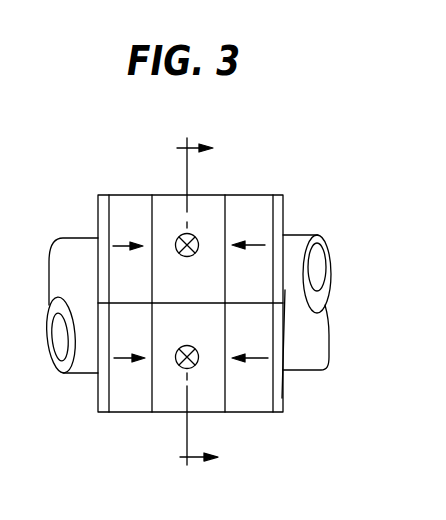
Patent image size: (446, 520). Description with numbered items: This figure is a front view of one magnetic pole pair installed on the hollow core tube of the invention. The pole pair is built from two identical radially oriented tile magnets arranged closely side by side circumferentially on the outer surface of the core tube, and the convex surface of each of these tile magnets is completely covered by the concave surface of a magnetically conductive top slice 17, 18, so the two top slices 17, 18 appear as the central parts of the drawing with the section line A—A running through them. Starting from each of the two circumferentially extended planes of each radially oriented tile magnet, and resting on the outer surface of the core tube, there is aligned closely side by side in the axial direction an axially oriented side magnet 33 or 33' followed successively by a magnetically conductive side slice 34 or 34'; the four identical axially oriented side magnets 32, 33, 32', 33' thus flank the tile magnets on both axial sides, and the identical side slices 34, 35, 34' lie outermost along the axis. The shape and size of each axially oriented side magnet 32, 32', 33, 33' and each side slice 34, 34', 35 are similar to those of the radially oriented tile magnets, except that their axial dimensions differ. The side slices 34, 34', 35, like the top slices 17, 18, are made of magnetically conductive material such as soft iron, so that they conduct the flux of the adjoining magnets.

The magnetically conductive top slice 17 is at (210, 230).
The magnetically conductive top slice 18 is at (213, 397).
The axially oriented side magnet 32 is at (265, 396).
The axially oriented side magnet 32' is at (133, 397).
The axially oriented side magnet 33 is at (281, 322).
The axially oriented side magnet 33' is at (130, 227).
The magnetically conductive side slice 34 is at (293, 282).
The magnetically conductive side slice 34' is at (82, 282).
The magnetically conductive side slice 35 is at (284, 303).